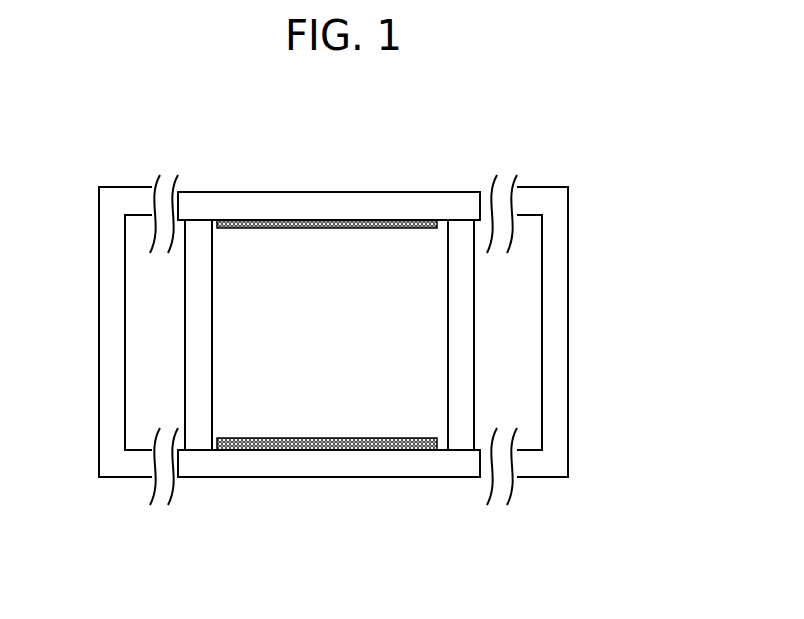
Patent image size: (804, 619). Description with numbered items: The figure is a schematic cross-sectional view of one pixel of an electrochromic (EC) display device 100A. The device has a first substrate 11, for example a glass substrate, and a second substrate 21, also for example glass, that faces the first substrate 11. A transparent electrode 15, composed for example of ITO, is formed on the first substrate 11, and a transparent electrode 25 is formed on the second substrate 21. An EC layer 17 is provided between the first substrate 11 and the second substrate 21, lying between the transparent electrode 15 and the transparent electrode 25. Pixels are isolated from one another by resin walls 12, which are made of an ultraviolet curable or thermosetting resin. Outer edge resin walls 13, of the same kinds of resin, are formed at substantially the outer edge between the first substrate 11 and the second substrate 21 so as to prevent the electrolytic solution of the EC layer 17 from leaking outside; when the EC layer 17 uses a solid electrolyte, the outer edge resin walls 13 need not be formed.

The EC display device 100A is at (453, 140).
The first substrate 11 is at (462, 463).
The resin walls 12 is at (195, 405).
The outer edge resin walls 13 is at (114, 294).
The transparent electrode 15 is at (407, 450).
The EC layer 17 is at (352, 425).
The second substrate 21 is at (462, 200).
The transparent electrode 25 is at (392, 220).